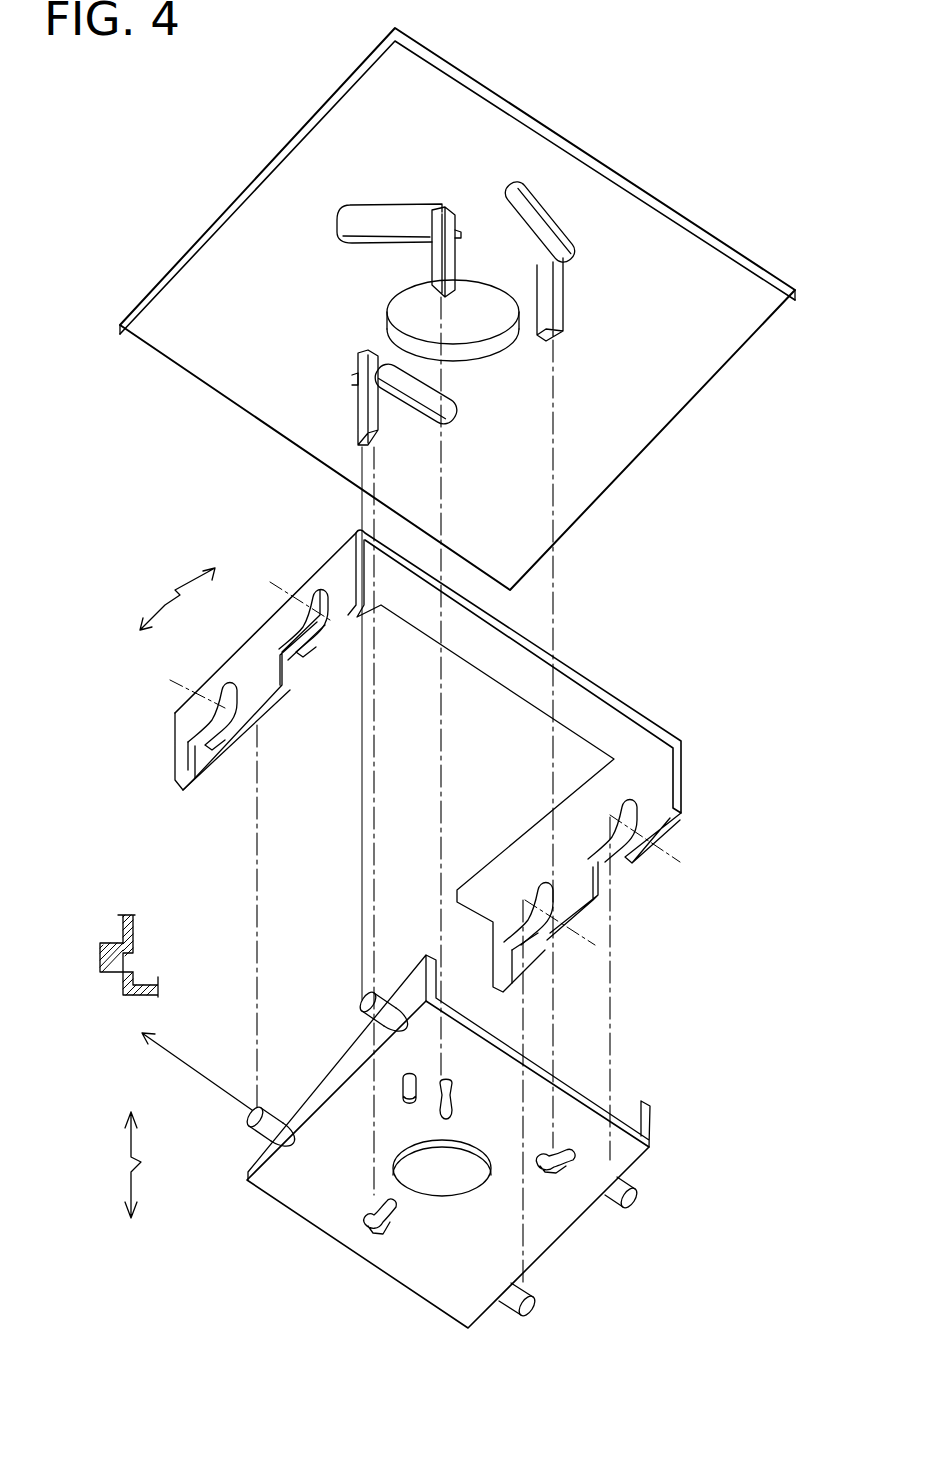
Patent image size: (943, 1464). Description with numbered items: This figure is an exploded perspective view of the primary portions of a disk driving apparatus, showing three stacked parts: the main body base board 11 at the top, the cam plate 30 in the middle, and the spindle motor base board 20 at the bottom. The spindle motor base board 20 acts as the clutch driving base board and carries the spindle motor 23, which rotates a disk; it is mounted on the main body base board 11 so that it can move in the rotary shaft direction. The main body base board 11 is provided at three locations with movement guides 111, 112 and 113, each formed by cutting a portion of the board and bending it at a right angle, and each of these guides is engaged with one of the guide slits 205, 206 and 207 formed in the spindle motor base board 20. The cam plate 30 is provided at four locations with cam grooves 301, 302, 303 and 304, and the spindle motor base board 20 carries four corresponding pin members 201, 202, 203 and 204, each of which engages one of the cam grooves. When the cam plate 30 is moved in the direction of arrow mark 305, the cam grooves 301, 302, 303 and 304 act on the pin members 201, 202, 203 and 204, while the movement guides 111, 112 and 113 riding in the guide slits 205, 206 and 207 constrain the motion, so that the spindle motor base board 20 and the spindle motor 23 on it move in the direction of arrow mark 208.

The main body base board 11 is at (307, 181).
The movement guide 111 is at (463, 262).
The movement guide 112 is at (356, 397).
The movement guide 113 is at (565, 290).
The cam plate 30 is at (597, 710).
The cam groove 301 is at (226, 686).
The cam groove 302 is at (318, 596).
The cam groove 303 is at (640, 815).
The cam groove 304 is at (552, 897).
The arrow mark 305 is at (152, 605).
The spindle motor base board 20 is at (313, 1074).
The pin member 201 is at (247, 1140).
The pin member 202 is at (362, 996).
The pin member 203 is at (637, 1200).
The pin member 204 is at (534, 1300).
The guide slit 205 is at (457, 1098).
The guide slit 206 is at (364, 1230).
The guide slit 207 is at (562, 1150).
The spindle motor 23 is at (437, 1197).
The arrow mark 208 is at (129, 1158).